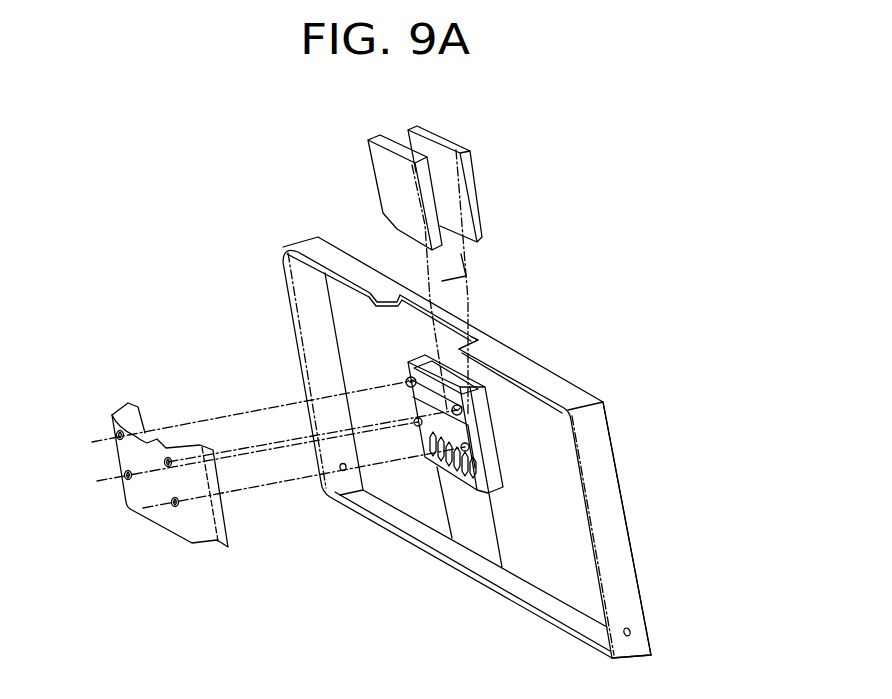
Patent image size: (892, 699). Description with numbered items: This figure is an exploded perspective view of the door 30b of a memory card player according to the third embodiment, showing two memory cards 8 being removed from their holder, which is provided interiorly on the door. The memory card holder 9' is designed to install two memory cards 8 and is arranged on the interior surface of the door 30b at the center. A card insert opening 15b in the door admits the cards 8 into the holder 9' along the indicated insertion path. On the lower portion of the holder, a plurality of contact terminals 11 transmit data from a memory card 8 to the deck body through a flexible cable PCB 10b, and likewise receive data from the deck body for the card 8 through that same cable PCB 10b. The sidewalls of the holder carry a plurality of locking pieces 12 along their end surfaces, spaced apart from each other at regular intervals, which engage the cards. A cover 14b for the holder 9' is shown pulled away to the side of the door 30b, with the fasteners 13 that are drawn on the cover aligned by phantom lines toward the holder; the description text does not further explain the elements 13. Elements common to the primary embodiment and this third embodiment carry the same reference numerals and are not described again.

The memory card 8 is at (470, 206).
The memory card holder 9' is at (370, 385).
The flexible cable PCB 10b is at (490, 545).
The contact terminals 11 is at (414, 419).
The locking pieces 12 is at (452, 409).
The screws 13 is at (173, 505).
The cover 14b is at (127, 488).
The card insert opening 15b is at (461, 340).
The door 30b is at (626, 542).